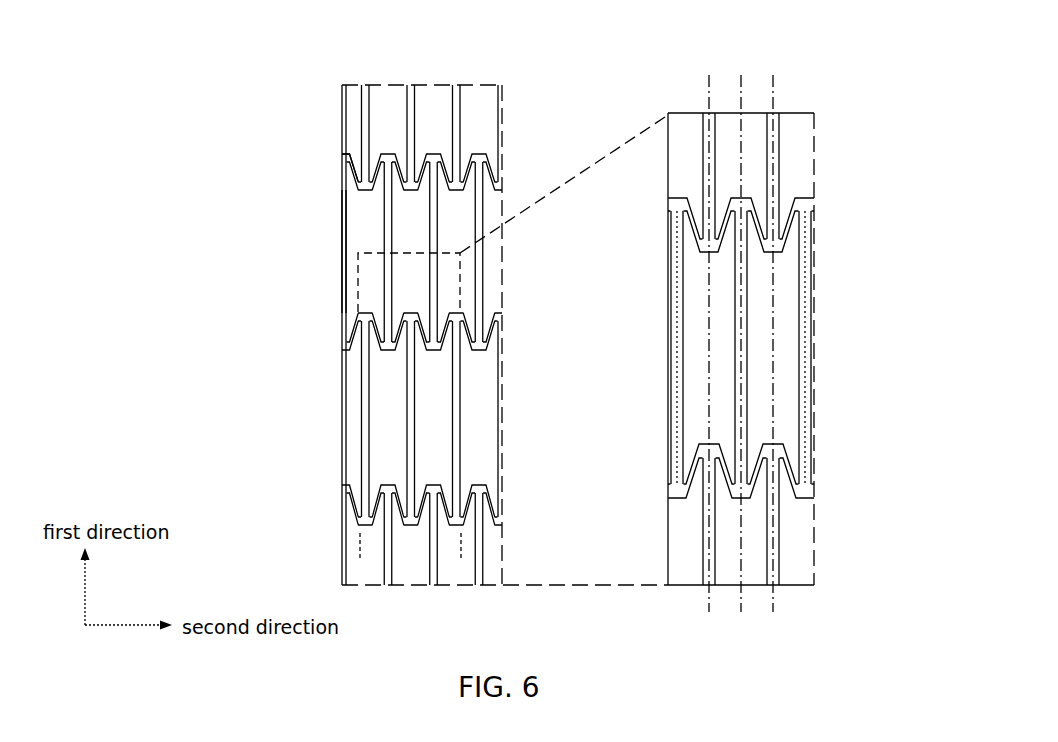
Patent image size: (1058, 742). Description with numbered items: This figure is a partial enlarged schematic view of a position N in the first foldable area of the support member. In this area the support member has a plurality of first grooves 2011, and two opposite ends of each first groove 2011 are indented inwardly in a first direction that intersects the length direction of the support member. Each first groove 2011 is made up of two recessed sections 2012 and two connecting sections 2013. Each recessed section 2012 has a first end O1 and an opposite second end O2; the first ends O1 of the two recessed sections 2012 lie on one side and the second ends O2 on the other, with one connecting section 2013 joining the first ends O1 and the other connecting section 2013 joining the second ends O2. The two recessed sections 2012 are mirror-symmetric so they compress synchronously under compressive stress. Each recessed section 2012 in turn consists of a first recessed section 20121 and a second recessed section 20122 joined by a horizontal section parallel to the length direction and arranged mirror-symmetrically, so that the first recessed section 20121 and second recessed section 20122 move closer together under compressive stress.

The first end O1 is at (347, 164).
The second end O2 is at (385, 160).
The recessed section 2012 is at (345, 183).
The first groove 2011 is at (357, 225).
The connecting section 2013 is at (340, 275).
The position N is at (342, 377).
The second recessed section 20122 is at (793, 216).
The first recessed section 20121 is at (770, 250).